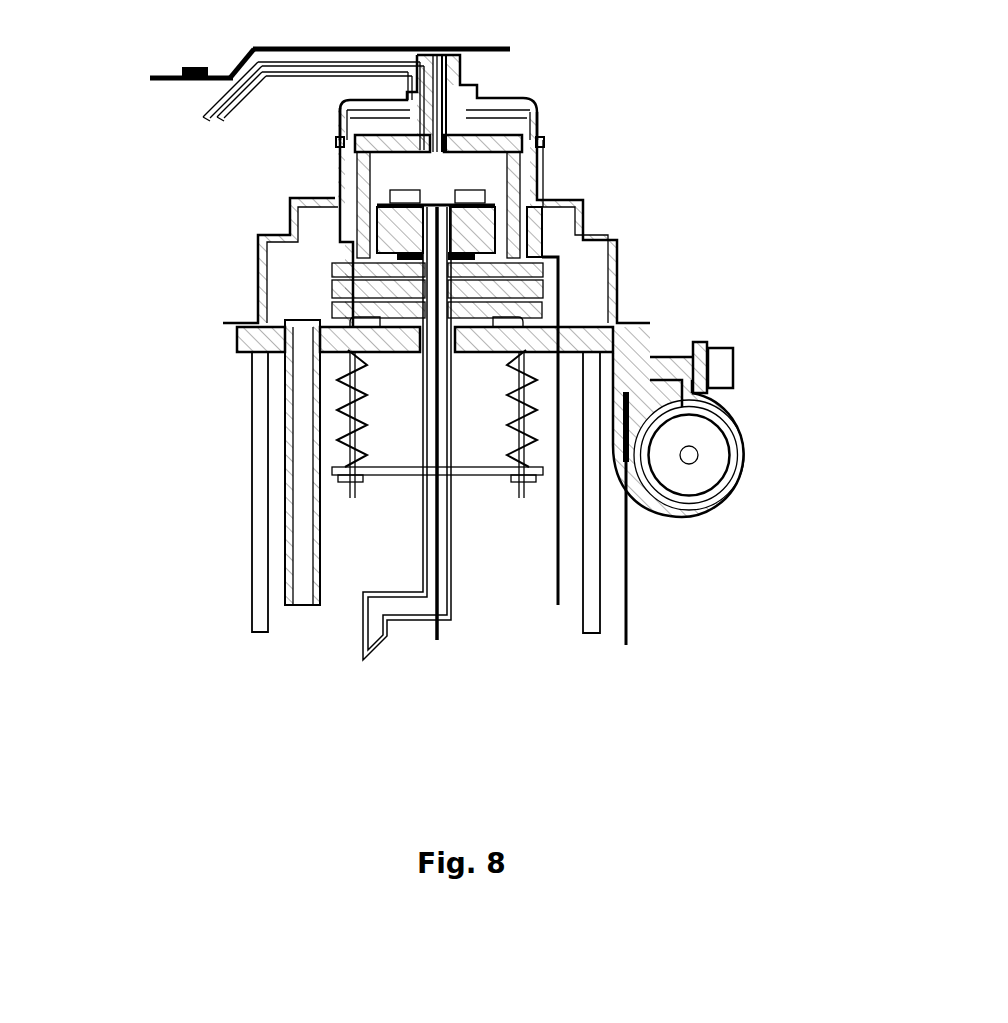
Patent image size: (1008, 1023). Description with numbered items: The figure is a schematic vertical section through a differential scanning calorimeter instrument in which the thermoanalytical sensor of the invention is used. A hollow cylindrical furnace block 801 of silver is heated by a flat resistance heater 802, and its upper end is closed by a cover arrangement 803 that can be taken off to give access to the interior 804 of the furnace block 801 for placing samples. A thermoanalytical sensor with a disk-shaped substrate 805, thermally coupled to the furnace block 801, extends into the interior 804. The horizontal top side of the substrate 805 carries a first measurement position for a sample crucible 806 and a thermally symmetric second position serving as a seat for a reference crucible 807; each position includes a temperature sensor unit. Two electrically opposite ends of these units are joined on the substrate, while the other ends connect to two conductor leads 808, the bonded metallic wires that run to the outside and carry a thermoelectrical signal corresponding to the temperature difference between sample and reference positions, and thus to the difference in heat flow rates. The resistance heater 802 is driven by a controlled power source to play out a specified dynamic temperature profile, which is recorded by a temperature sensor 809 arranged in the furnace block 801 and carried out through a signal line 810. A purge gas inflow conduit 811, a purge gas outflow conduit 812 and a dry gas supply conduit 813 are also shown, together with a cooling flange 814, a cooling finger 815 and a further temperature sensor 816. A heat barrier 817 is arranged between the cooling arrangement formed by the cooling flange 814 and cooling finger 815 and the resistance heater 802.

The furnace block 801 is at (557, 223).
The resistance heater 802 is at (551, 261).
The cover arrangement 803 is at (503, 86).
The interior 804 is at (544, 142).
The disk-shaped substrate 805 is at (389, 217).
The sample crucible 806 is at (535, 196).
The reference crucible 807 is at (326, 174).
The conductor leads 808 is at (476, 472).
The temperature sensor 809 is at (298, 267).
The signal line 810 is at (571, 484).
The purge gas inflow conduit 811 is at (407, 473).
The purge gas outflow conduit 812 is at (292, 100).
The dry gas supply conduit 813 is at (296, 518).
The cooling flange 814 is at (735, 438).
The cooling finger 815 is at (748, 458).
The temperature sensor 816 is at (756, 376).
The heat barrier 817 is at (327, 321).